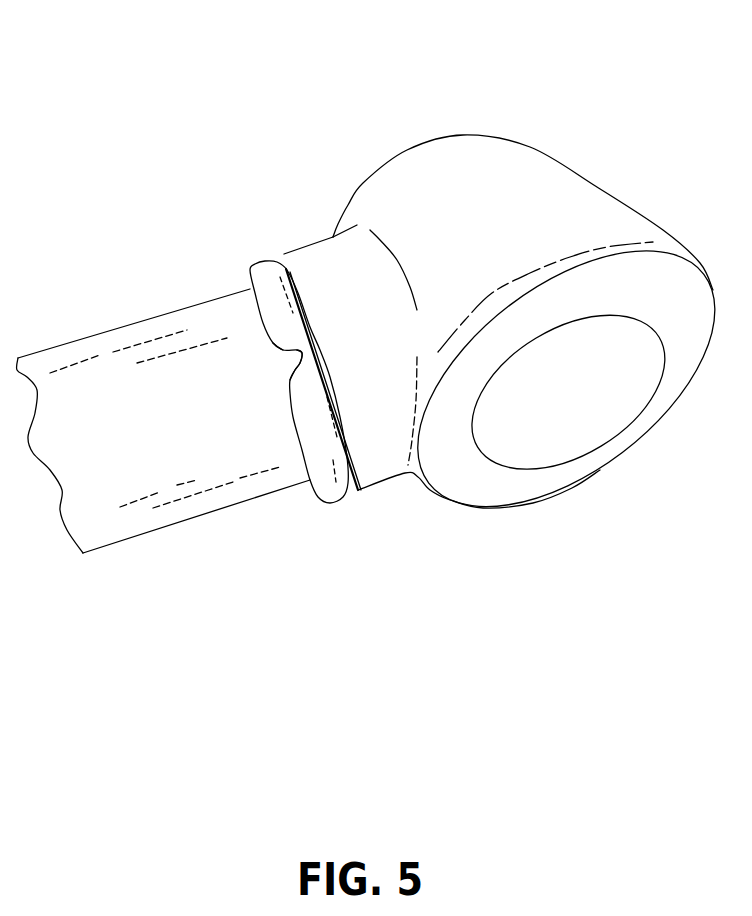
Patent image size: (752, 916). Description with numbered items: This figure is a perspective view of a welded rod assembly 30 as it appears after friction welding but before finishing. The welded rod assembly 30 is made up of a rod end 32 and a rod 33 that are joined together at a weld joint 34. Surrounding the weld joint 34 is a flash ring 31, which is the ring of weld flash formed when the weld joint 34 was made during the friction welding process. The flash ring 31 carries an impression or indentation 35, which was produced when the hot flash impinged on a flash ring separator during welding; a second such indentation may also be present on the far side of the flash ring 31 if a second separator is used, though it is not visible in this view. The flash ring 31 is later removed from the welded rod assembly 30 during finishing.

The welded rod assembly 30 is at (582, 60).
The flash ring 31 is at (263, 282).
The rod end 32 is at (718, 453).
The rod 33 is at (386, 575).
The weld joint 34 is at (284, 270).
The impression or indentation 35 is at (297, 352).